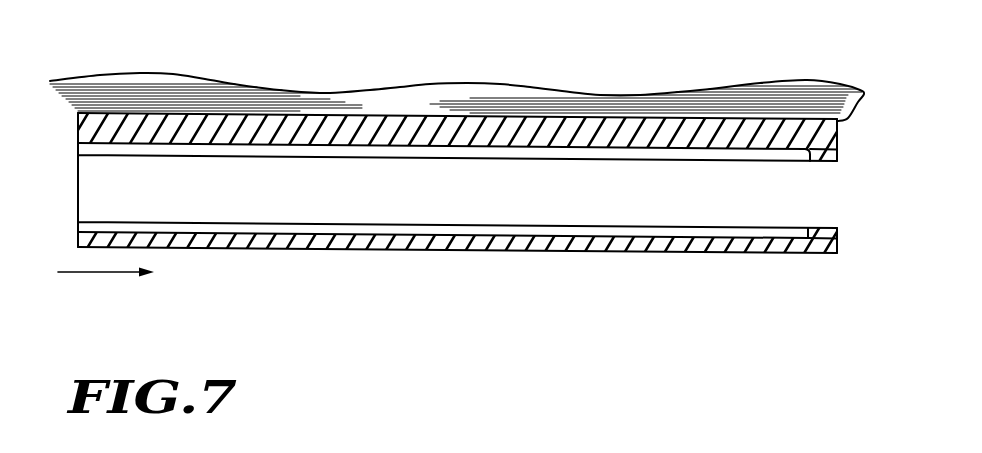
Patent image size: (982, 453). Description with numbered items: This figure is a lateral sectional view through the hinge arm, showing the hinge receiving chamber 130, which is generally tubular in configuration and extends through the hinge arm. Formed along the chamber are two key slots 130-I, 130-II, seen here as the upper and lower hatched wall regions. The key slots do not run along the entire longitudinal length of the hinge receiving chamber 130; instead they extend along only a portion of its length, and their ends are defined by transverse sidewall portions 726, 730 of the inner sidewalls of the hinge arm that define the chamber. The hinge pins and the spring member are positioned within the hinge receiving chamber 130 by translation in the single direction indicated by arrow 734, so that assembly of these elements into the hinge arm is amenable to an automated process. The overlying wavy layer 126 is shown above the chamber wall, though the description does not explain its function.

The dissolvable outer coating layer 126 is at (126, 118).
The key slot 130-I is at (557, 117).
The key slot 130-II is at (322, 232).
The hinge receiving chamber 130 is at (502, 205).
The transverse sidewall portion 726 is at (812, 155).
The transverse sidewall portion 730 is at (803, 232).
The arrow 734 is at (110, 272).